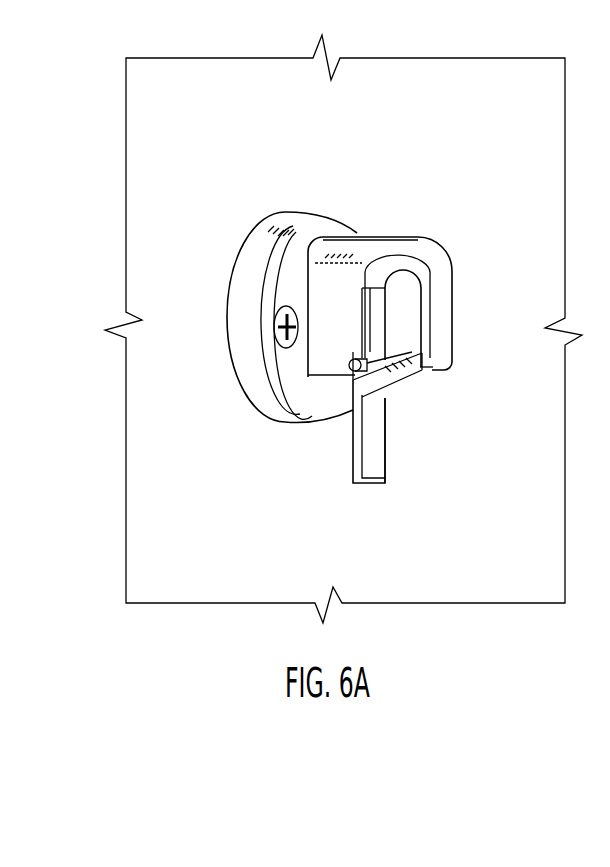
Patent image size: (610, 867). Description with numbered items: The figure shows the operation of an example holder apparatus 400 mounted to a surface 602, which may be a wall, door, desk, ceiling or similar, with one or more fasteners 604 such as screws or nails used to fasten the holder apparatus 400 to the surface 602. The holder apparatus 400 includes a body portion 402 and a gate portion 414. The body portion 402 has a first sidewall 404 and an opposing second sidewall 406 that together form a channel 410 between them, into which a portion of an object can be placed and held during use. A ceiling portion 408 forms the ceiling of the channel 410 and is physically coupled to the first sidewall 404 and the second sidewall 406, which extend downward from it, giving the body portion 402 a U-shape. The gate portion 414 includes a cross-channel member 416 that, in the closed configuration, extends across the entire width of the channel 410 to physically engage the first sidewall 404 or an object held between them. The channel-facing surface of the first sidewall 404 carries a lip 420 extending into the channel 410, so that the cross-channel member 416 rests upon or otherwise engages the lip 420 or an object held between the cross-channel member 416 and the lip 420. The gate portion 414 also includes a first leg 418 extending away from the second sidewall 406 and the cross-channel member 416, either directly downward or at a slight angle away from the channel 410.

The holder apparatus 400 is at (431, 195).
The body portion 402 is at (462, 288).
The first sidewall 404 is at (445, 327).
The second sidewall 406 is at (369, 307).
The ceiling portion 408 is at (385, 242).
The channel 410 is at (395, 327).
The gate portion 414 is at (350, 430).
The cross-channel member 416 is at (402, 397).
The first leg 418 is at (367, 463).
The lip 420 is at (425, 374).
The surface 602 is at (206, 135).
The fastener 604 is at (264, 331).